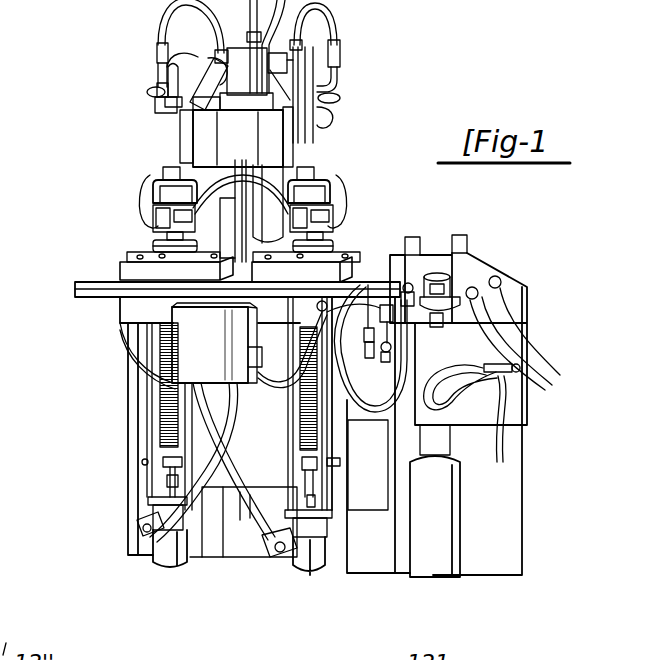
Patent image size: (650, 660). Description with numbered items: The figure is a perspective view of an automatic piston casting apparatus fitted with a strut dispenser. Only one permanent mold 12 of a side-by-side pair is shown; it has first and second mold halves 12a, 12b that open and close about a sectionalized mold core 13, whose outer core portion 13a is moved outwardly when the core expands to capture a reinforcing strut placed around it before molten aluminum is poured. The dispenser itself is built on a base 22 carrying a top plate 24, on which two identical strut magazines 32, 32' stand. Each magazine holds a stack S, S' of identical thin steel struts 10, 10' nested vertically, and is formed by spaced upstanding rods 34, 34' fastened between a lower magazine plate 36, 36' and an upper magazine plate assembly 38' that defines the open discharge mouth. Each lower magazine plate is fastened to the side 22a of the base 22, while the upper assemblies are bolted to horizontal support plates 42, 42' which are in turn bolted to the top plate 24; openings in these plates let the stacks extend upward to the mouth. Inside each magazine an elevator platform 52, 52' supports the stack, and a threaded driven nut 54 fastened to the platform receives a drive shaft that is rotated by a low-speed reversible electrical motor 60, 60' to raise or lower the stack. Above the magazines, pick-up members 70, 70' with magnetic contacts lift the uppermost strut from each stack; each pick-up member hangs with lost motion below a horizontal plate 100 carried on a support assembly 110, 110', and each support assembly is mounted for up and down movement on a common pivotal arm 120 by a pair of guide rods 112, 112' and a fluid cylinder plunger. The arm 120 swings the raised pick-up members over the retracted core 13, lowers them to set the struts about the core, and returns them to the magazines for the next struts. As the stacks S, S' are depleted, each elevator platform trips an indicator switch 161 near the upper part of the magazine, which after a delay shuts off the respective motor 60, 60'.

The strut 10 is at (350, 216).
The strut 10' is at (139, 223).
The permanent mold 12 is at (479, 235).
The mold half 12a is at (468, 243).
The mold half 12b is at (414, 237).
The mold core 13 is at (439, 264).
The outer core portion 13a is at (452, 291).
The base 22 is at (126, 405).
The side of the base 22a is at (210, 550).
The top plate 24 is at (103, 293).
The strut magazine 32 is at (346, 452).
The strut magazine 32' is at (118, 416).
The upstanding rod 34 is at (282, 480).
The upstanding rod 34' is at (111, 482).
The lower magazine plate 36 is at (303, 566).
The lower magazine plate 36' is at (114, 515).
The upper magazine plate assembly 38' is at (134, 246).
The horizontal support plate 42 is at (302, 271).
The horizontal support plate 42' is at (126, 268).
The elevator platform 52 is at (361, 421).
The elevator platform 52' is at (113, 456).
The threaded driven nut 54 is at (338, 463).
The reversible electrical motor 60 is at (297, 587).
The reversible electrical motor 60' is at (163, 572).
The pick-up member 70 is at (342, 199).
The pick-up member 70' is at (179, 199).
The horizontal plate 100 is at (328, 166).
The support assembly 110 is at (357, 91).
The support assembly 110' is at (153, 110).
The guide rod 112 is at (355, 51).
The guide rod 112' is at (148, 61).
The pivotal arm 120 is at (252, 156).
The indicator switch 161 is at (320, 307).
The stack of struts S is at (332, 364).
The stack of struts S' is at (181, 432).